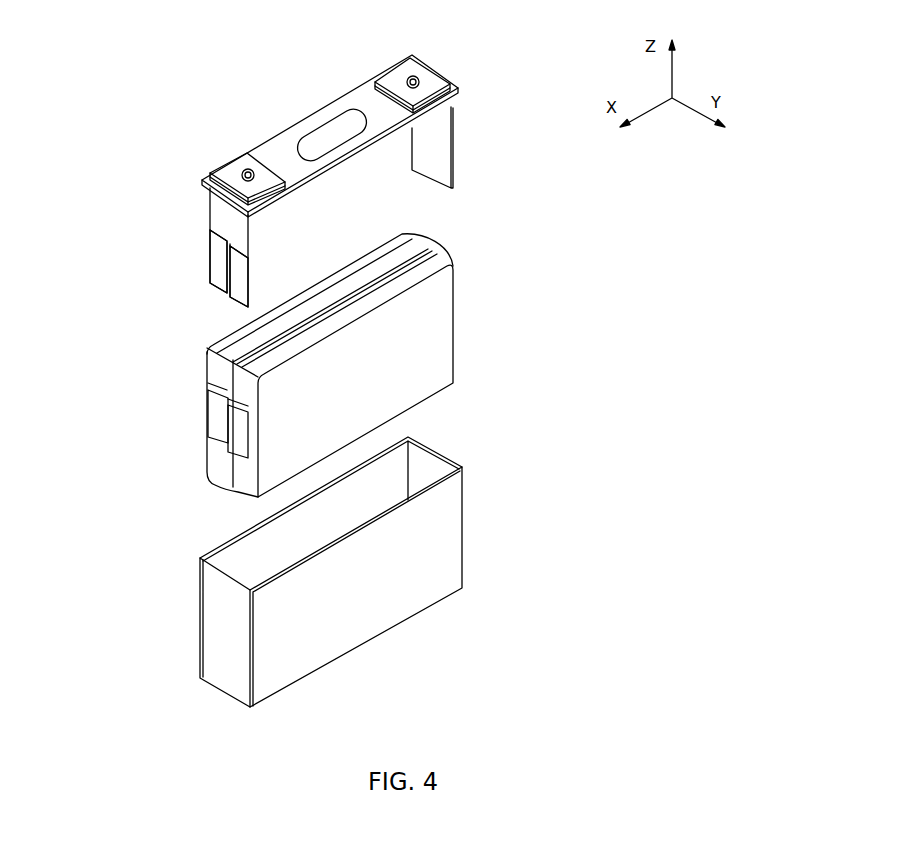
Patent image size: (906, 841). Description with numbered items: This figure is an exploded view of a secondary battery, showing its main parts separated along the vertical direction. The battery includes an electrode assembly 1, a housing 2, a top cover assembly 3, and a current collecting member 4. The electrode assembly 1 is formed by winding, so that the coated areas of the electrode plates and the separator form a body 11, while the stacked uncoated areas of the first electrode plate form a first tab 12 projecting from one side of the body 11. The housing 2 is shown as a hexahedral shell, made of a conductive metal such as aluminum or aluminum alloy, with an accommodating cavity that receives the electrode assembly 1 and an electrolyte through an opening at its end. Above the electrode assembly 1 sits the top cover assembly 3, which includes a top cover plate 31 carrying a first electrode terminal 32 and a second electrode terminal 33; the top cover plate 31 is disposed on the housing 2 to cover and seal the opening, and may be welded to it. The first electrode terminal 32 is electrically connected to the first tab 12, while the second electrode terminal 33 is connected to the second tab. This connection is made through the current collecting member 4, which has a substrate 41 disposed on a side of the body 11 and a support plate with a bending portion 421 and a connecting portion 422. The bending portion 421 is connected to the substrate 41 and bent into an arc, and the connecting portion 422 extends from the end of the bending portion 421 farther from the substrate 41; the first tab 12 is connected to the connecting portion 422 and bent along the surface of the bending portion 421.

The electrode assembly 1 is at (360, 361).
The housing 2 is at (450, 540).
The top cover assembly 3 is at (265, 177).
The current collecting member 4 is at (180, 256).
The body 11 is at (440, 347).
The first tab 12 is at (217, 423).
The top cover plate 31 is at (288, 137).
The first electrode terminal 32 is at (238, 170).
The second electrode terminal 33 is at (403, 73).
The substrate 41 is at (222, 217).
The bending portion 421 is at (248, 273).
The connecting portion 422 is at (237, 294).